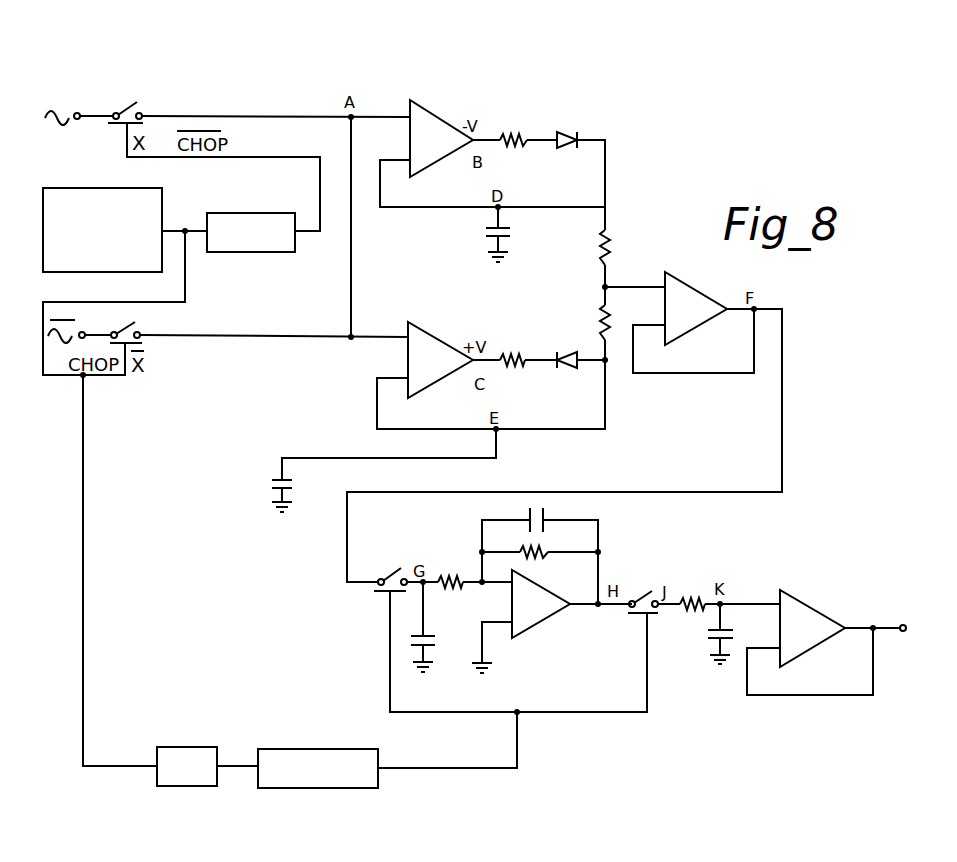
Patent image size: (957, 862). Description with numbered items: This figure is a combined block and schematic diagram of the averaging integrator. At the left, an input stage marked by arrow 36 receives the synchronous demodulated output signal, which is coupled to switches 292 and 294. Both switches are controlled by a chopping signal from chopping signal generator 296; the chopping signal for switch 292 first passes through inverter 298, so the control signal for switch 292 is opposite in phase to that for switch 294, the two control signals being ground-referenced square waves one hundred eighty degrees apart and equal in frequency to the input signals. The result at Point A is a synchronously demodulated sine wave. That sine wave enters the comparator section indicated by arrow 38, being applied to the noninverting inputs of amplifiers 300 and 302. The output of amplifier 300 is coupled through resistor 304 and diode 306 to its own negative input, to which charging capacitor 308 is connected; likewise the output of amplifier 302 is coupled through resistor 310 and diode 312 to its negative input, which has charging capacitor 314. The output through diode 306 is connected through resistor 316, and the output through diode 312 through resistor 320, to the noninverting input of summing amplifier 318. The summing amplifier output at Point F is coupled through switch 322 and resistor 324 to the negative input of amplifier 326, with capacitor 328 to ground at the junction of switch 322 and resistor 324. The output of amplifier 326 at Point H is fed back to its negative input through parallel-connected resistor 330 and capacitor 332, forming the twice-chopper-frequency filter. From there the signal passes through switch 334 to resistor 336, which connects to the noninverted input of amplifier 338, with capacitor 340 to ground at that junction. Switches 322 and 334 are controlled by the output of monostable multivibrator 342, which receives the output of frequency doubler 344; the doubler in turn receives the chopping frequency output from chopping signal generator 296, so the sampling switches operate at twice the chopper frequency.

The chopper input stage 36 is at (123, 75).
The demodulator circuit 38 is at (650, 136).
The switch 292 is at (96, 93).
The switch 294 is at (161, 323).
The chopping signal generator 296 is at (102, 214).
The inverter 298 is at (251, 216).
The amplifier 300 is at (447, 135).
The amplifier 302 is at (446, 356).
The resistor 304 is at (532, 120).
The diode 306 is at (592, 121).
The charging capacitor 308 is at (463, 233).
The resistor 310 is at (487, 382).
The diode 312 is at (553, 381).
The charging capacitor 314 is at (349, 469).
The resistor 316 is at (635, 243).
The summing amplifier 318 is at (710, 305).
The resistor 320 is at (577, 319).
The switch 322 is at (381, 559).
The resistor 324 is at (441, 564).
The amplifier 326 is at (559, 608).
The capacitor 328 is at (443, 627).
The resistor 330 is at (555, 564).
The capacitor 332 is at (506, 514).
The switch 334 is at (634, 584).
The resistor 336 is at (709, 586).
The amplifier 338 is at (819, 624).
The capacitor 340 is at (696, 634).
The monostable multivibrator 342 is at (315, 753).
The frequency doubler 344 is at (177, 752).